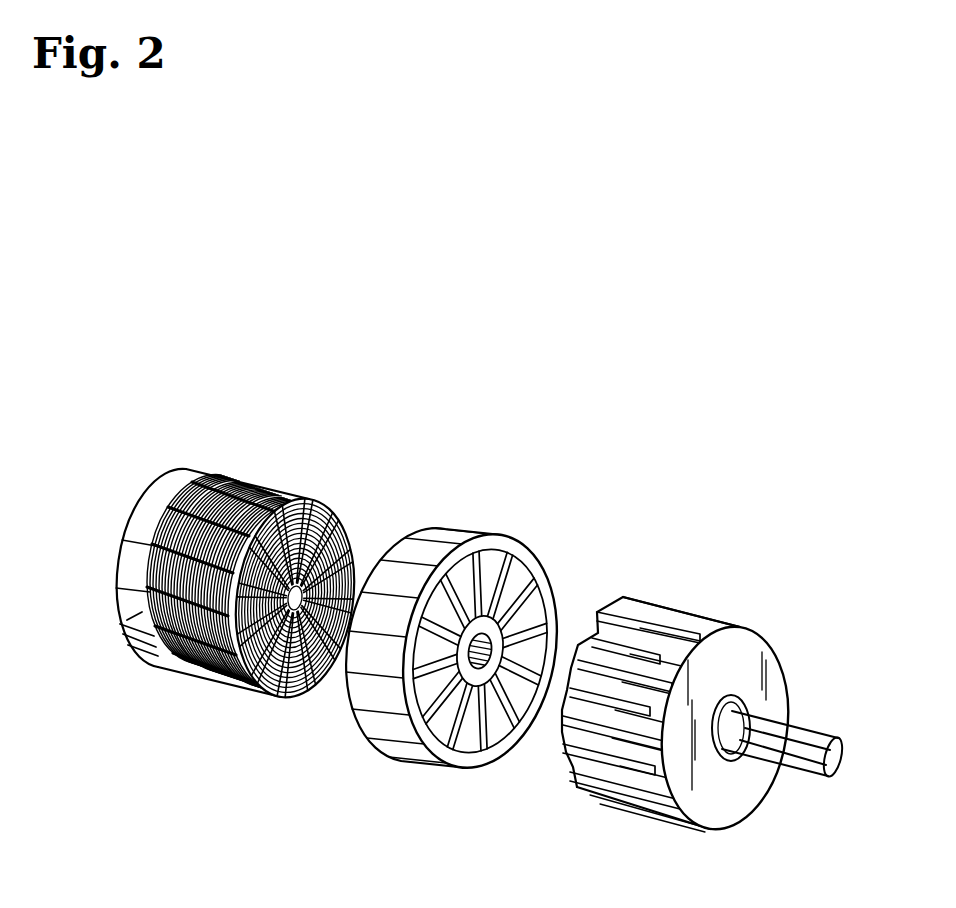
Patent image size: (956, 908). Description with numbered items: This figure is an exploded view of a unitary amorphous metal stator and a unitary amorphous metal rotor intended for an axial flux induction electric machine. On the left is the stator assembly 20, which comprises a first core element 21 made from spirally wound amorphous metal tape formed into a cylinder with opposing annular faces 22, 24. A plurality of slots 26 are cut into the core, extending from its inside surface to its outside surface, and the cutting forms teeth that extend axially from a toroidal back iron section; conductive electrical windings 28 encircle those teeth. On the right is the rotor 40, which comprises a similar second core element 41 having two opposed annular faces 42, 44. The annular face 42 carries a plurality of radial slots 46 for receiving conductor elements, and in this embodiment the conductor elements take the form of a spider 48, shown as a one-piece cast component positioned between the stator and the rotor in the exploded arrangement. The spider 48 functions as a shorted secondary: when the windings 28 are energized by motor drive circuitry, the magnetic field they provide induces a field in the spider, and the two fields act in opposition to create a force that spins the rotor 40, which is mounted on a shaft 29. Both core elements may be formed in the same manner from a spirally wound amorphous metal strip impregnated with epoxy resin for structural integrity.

The stator assembly 20 is at (236, 468).
The first core element 21 is at (122, 632).
The annular face 22 is at (290, 700).
The annular face 24 is at (116, 588).
The slots 26 is at (338, 534).
The conductive electrical windings 28 is at (190, 680).
The shaft 29 is at (788, 730).
The rotor 40 is at (575, 556).
The second core element 41 is at (703, 626).
The annular face 42 is at (558, 748).
The annular face 44 is at (712, 790).
The radial slots 46 is at (638, 605).
The spider 48 is at (470, 533).